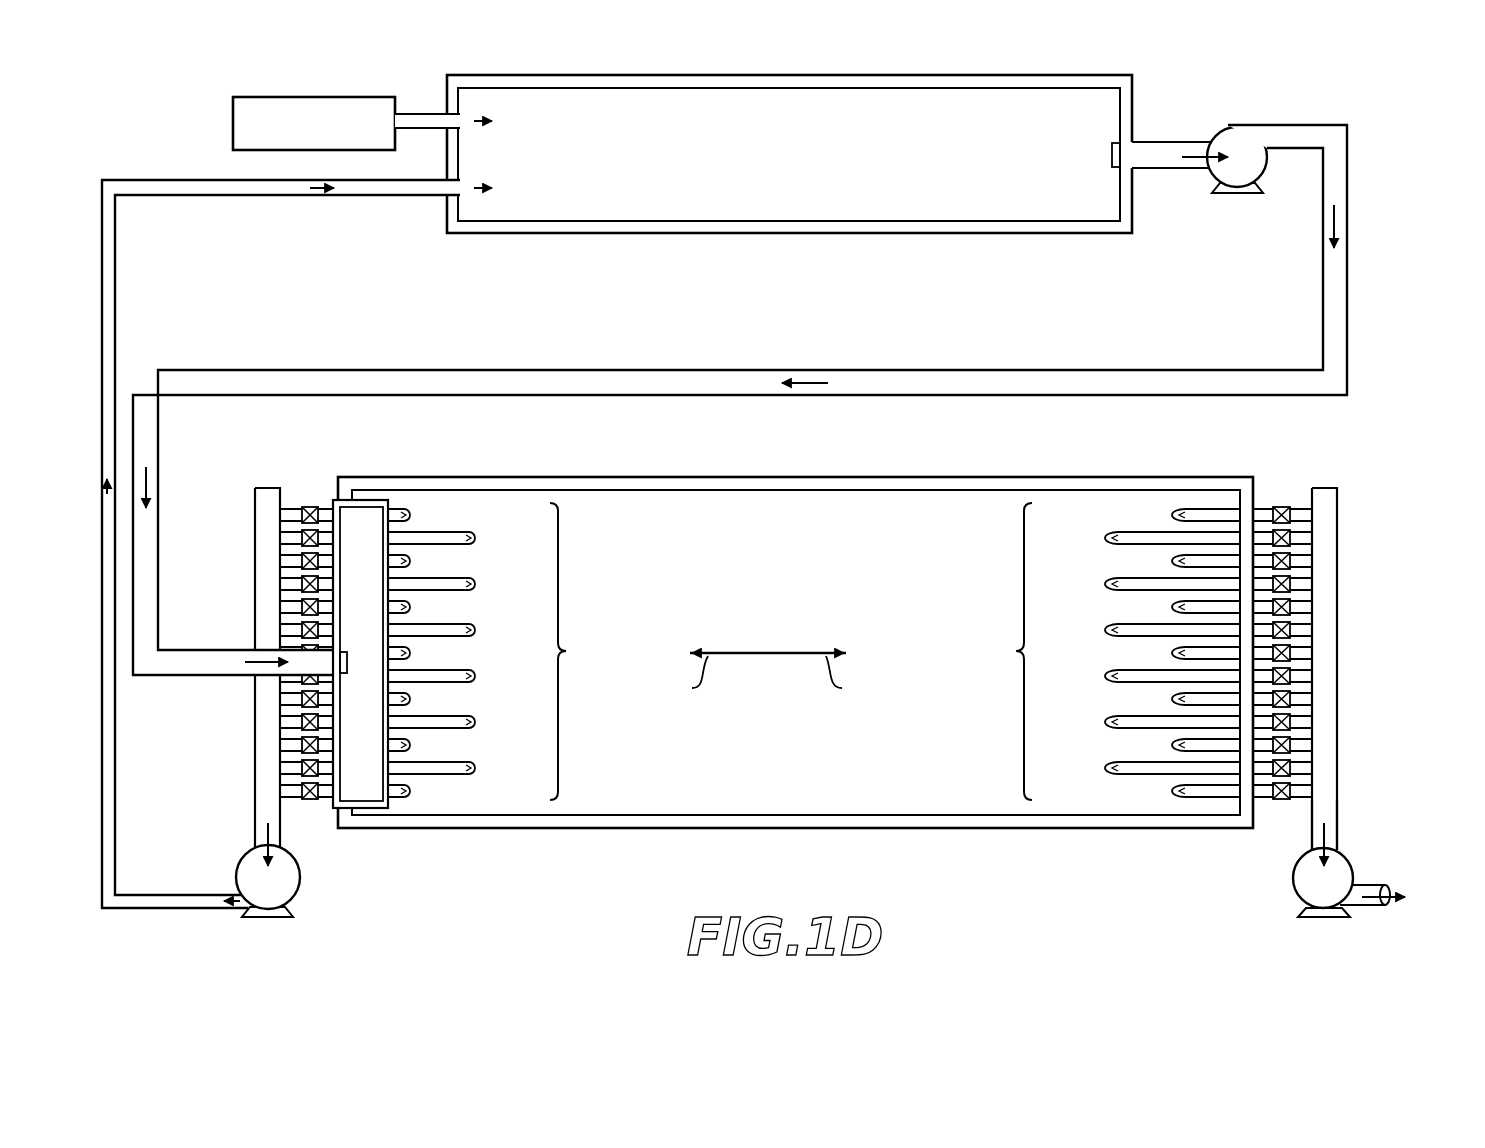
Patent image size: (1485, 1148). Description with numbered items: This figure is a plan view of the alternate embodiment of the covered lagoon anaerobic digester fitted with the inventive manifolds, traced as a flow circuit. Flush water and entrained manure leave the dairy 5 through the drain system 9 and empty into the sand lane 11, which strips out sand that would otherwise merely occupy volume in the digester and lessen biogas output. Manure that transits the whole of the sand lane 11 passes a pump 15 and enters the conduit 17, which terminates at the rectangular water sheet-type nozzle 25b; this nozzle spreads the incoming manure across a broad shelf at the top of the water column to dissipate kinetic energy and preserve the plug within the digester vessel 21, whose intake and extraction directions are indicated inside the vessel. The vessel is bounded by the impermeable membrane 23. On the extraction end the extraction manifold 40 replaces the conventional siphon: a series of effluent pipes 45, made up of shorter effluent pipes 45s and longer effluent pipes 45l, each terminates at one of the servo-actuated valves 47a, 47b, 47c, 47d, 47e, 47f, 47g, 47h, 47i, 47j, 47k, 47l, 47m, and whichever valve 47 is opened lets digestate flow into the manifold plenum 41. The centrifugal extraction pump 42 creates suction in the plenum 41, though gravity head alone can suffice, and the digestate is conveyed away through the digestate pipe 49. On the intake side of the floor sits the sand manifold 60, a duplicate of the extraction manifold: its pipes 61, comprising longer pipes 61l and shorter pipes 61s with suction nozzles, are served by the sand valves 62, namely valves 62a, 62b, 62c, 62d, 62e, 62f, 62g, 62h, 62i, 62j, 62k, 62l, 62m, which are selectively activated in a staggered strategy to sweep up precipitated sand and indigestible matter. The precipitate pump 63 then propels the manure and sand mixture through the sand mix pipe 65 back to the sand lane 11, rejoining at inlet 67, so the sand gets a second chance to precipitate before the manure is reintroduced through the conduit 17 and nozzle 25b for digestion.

The dairy 5 is at (292, 97).
The drain system 9 is at (423, 114).
The sand lane 11 is at (934, 169).
The transfer pump 15 is at (1228, 132).
The conduit 17 is at (762, 370).
The digester vessel 21 is at (797, 611).
The impermeable membrane 23 is at (810, 830).
The sheet-type nozzle 25b is at (349, 630).
The extraction manifold 40 is at (1357, 474).
The manifold plenum 41 is at (1331, 808).
The extraction pump 42 is at (1301, 884).
The effluent pipes 45 is at (1001, 651).
The shorter effluent pipes 45s is at (1172, 515).
The longer effluent pipes 45l is at (1105, 538).
The valve 47 is at (1412, 490).
The servo-actuated valve 47a is at (1292, 515).
The servo-actuated valve 47b is at (1292, 538).
The servo-actuated valve 47c is at (1292, 561).
The servo-actuated valve 47d is at (1292, 584).
The servo-actuated valve 47e is at (1292, 607).
The servo-actuated valve 47f is at (1292, 630).
The servo-actuated valve 47g is at (1292, 653).
The servo-actuated valve 47h is at (1292, 676).
The servo-actuated valve 47i is at (1292, 699).
The servo-actuated valve 47j is at (1292, 722).
The servo-actuated valve 47k is at (1292, 745).
The servo-actuated valve 47l is at (1292, 768).
The servo-actuated valve 47m is at (1292, 791).
The digestate pipe 49 is at (1371, 906).
The sand manifold 60 is at (466, 460).
The pipes 61 is at (576, 651).
The shorter pipes 61s is at (410, 515).
The longer pipes 61l is at (475, 538).
The sand valves 62 is at (186, 478).
The sand valve 62a is at (300, 515).
The sand valve 62b is at (300, 538).
The sand valve 62c is at (300, 561).
The sand valve 62d is at (300, 584).
The sand valve 62e is at (300, 607).
The sand valve 62f is at (300, 630).
The sand valve 62g is at (300, 653).
The sand valve 62h is at (300, 676).
The sand valve 62i is at (300, 699).
The sand valve 62j is at (300, 722).
The sand valve 62k is at (300, 745).
The sand valve 62l is at (300, 768).
The sand valve 62m is at (300, 791).
The precipitate pump 63 is at (290, 890).
The sand mix pipe 65 is at (397, 196).
The return inlet to sand lane 67 is at (463, 187).